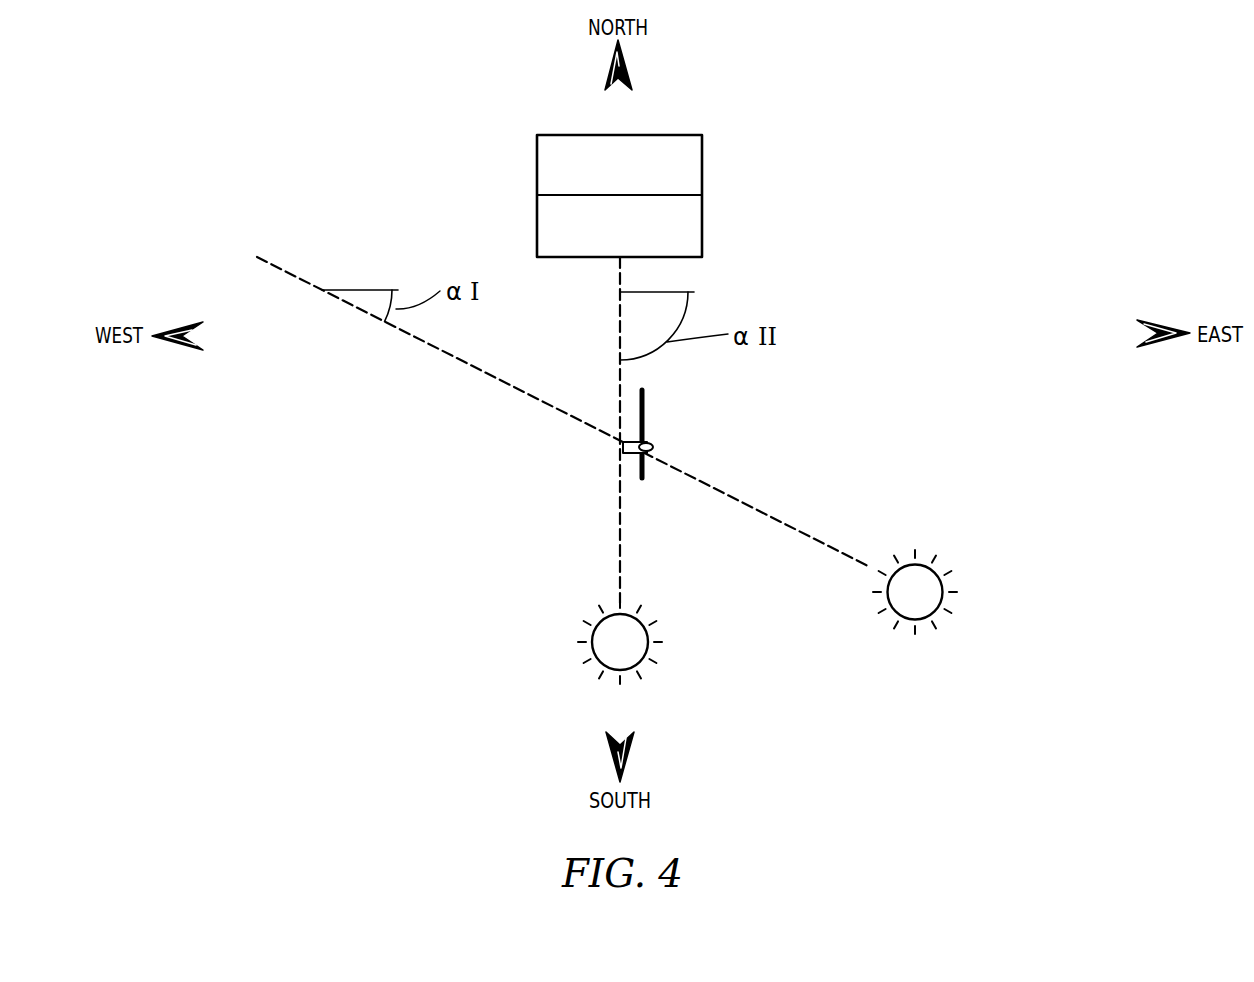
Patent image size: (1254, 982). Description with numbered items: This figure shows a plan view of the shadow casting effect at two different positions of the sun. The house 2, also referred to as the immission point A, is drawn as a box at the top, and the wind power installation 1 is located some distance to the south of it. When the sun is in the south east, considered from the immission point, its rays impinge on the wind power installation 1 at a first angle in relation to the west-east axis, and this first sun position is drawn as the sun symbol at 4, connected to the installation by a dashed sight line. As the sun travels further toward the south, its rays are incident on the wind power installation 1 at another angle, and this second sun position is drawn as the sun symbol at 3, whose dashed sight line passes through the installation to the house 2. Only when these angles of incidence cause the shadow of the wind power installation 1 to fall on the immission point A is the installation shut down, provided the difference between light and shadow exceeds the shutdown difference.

The wind power installation 1 is at (646, 430).
The house 2 is at (702, 222).
The sun position II 3 is at (591, 648).
The sun position I 4 is at (943, 583).